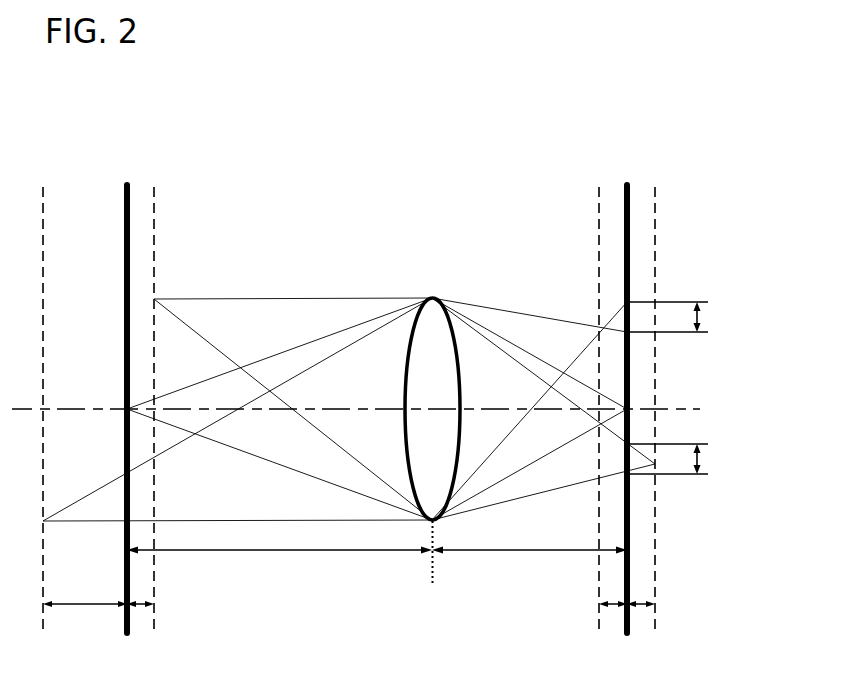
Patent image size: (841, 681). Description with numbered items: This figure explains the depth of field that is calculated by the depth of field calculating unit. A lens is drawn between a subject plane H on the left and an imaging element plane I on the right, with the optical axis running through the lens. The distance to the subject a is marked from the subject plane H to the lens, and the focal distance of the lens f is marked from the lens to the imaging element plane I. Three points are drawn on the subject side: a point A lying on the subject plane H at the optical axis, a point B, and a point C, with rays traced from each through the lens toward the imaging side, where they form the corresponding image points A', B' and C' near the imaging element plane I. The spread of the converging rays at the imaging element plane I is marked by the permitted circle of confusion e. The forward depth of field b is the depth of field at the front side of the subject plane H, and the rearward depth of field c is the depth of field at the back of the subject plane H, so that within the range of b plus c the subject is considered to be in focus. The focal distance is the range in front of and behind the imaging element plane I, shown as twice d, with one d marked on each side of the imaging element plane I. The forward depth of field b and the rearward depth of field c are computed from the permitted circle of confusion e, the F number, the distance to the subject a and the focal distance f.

The subject plane H is at (131, 193).
The imaging element plane I is at (631, 193).
The object point on optical axis A is at (267, 409).
The object point behind object plane B is at (284, 398).
The object point in front of object plane C is at (225, 414).
The image point of A A' is at (540, 409).
The image point of B B' is at (555, 409).
The image point of C C' is at (529, 409).
The permitted circle of confusion e is at (697, 460).
The distance to the subject a is at (279, 562).
The focal distance of the lens f is at (529, 562).
The forward depth of field b is at (140, 616).
The rearward depth of field c is at (85, 616).
The focal distance range half-width d is at (627, 616).